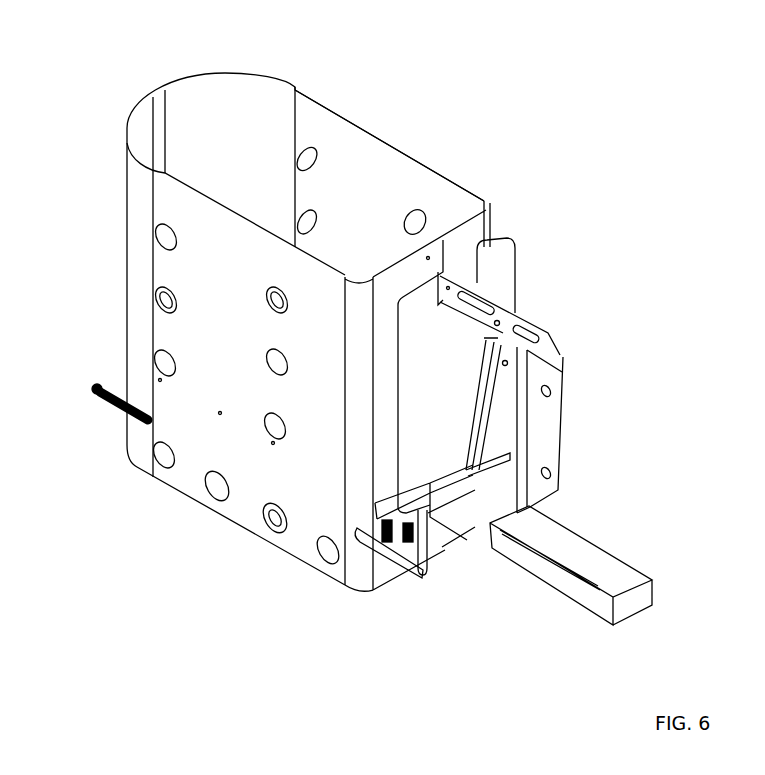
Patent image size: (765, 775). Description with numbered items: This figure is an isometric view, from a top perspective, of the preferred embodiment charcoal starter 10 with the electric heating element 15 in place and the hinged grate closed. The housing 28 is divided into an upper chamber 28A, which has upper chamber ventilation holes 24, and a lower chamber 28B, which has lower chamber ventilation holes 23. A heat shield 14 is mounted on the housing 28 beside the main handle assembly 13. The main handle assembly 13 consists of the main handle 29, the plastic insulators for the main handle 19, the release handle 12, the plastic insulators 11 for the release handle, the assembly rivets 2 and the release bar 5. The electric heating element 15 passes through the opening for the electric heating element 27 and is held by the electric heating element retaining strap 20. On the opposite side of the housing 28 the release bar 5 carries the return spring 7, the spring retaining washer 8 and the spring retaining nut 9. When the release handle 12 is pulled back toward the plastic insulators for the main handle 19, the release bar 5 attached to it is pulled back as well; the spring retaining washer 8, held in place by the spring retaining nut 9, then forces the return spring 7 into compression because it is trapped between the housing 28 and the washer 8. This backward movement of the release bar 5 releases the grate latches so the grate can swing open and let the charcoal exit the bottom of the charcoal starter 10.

The charcoal starter 10 is at (369, 346).
The housing 28 is at (333, 313).
The upper chamber 28A is at (392, 172).
The lower chamber 28B is at (264, 540).
The upper chamber ventilation holes 24 is at (266, 351).
The lower chamber ventilation holes 23 is at (212, 504).
The spring retaining nut 9 is at (92, 403).
The spring retaining washer 8 is at (103, 413).
The return spring 7 is at (120, 420).
The heat shield 14 is at (518, 247).
The main handle assembly 13 is at (505, 454).
The main handle 29 is at (528, 314).
The plastic insulators for the release handle 11 is at (481, 351).
The release handle 12 is at (498, 395).
The electric heating element retaining strap 20 is at (397, 598).
The release bar 5 is at (433, 592).
The opening for the electric heating element 27 is at (363, 574).
The plastic insulators for the main handle 19 is at (557, 398).
The electric heating element 15 is at (587, 537).
The assembly rivets 2 is at (327, 470).